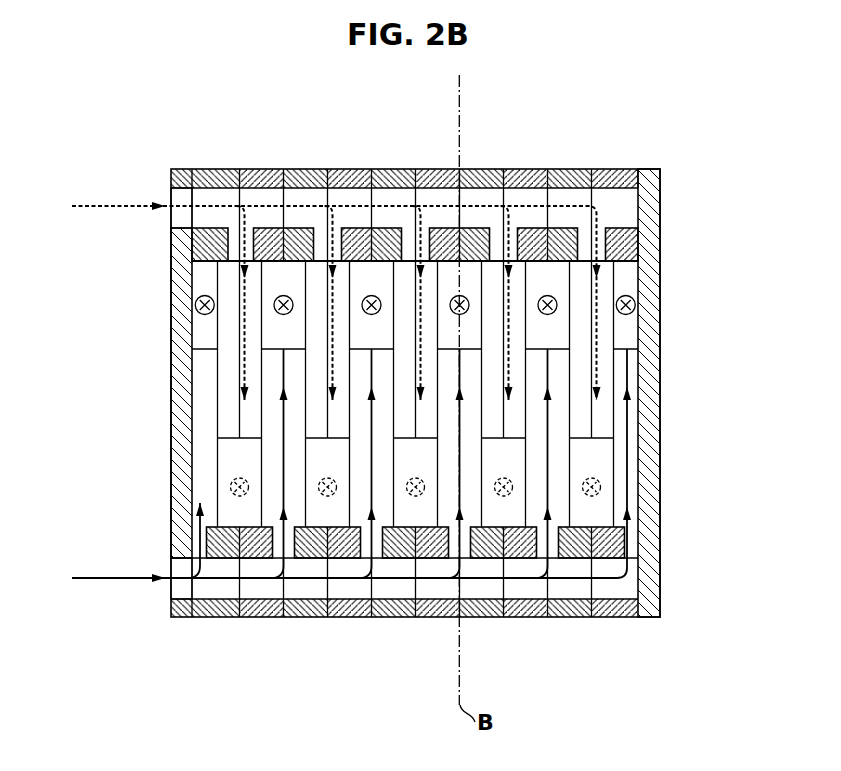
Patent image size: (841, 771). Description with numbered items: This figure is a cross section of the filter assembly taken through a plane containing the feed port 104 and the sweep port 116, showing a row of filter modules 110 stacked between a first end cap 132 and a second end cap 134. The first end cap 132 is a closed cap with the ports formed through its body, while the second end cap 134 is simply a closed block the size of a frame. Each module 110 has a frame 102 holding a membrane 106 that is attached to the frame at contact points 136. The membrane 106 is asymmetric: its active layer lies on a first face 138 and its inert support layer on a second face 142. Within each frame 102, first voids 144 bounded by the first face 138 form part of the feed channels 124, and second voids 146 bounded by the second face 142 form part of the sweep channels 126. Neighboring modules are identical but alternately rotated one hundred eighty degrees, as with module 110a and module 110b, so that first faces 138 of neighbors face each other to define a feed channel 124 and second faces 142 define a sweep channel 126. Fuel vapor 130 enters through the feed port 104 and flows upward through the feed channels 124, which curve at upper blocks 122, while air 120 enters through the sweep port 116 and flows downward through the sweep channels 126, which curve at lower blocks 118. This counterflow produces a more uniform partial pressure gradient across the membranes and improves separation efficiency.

The frame 102 is at (252, 178).
The feed port 104 is at (173, 567).
The membrane 106 is at (405, 273).
The filter module 110 is at (205, 170).
The module 110a is at (440, 168).
The module 110b is at (480, 168).
The sweep port 116 is at (173, 198).
The lower block 118 is at (238, 510).
The air 120 is at (87, 208).
The upper block 122 is at (372, 232).
The feed channel 124 is at (203, 488).
The sweep channel 126 is at (240, 327).
The fuel vapor 130 is at (113, 583).
The first end cap 132 is at (172, 375).
The second end cap 134 is at (652, 297).
The contact point 136 is at (218, 535).
The first face 138 is at (484, 422).
The second face 142 is at (482, 273).
The first void 144 is at (293, 472).
The second void 146 is at (222, 277).